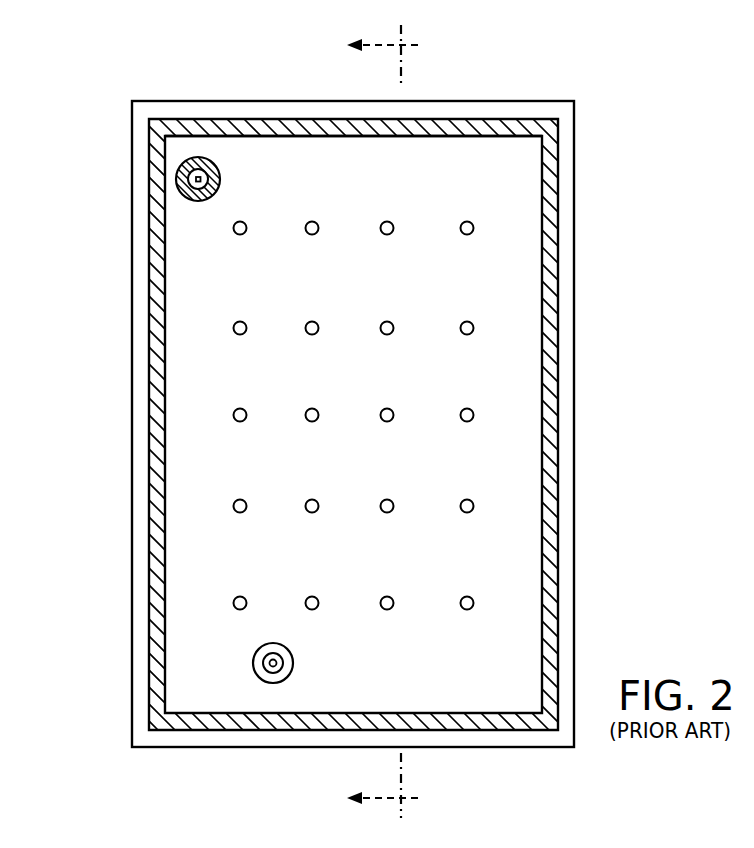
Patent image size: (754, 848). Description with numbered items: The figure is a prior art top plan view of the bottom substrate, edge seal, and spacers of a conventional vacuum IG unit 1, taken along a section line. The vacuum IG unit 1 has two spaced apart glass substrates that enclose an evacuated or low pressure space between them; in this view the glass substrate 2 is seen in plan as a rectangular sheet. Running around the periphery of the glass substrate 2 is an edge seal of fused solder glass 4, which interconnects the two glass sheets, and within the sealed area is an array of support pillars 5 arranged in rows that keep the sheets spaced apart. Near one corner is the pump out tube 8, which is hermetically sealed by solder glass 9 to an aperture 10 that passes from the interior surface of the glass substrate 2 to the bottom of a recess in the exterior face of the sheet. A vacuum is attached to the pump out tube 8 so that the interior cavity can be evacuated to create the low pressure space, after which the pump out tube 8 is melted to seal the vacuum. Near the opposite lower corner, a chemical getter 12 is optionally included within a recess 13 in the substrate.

The vacuum IG unit 1 is at (122, 624).
The glass substrate 2 is at (347, 110).
The edge seal of fused solder glass 4 is at (263, 128).
The support pillars 5 is at (481, 326).
The pump out tube 8 is at (185, 172).
The solder glass 9 is at (198, 202).
The aperture 10 is at (188, 185).
The chemical getter 12 is at (263, 671).
The recess 13 is at (288, 663).